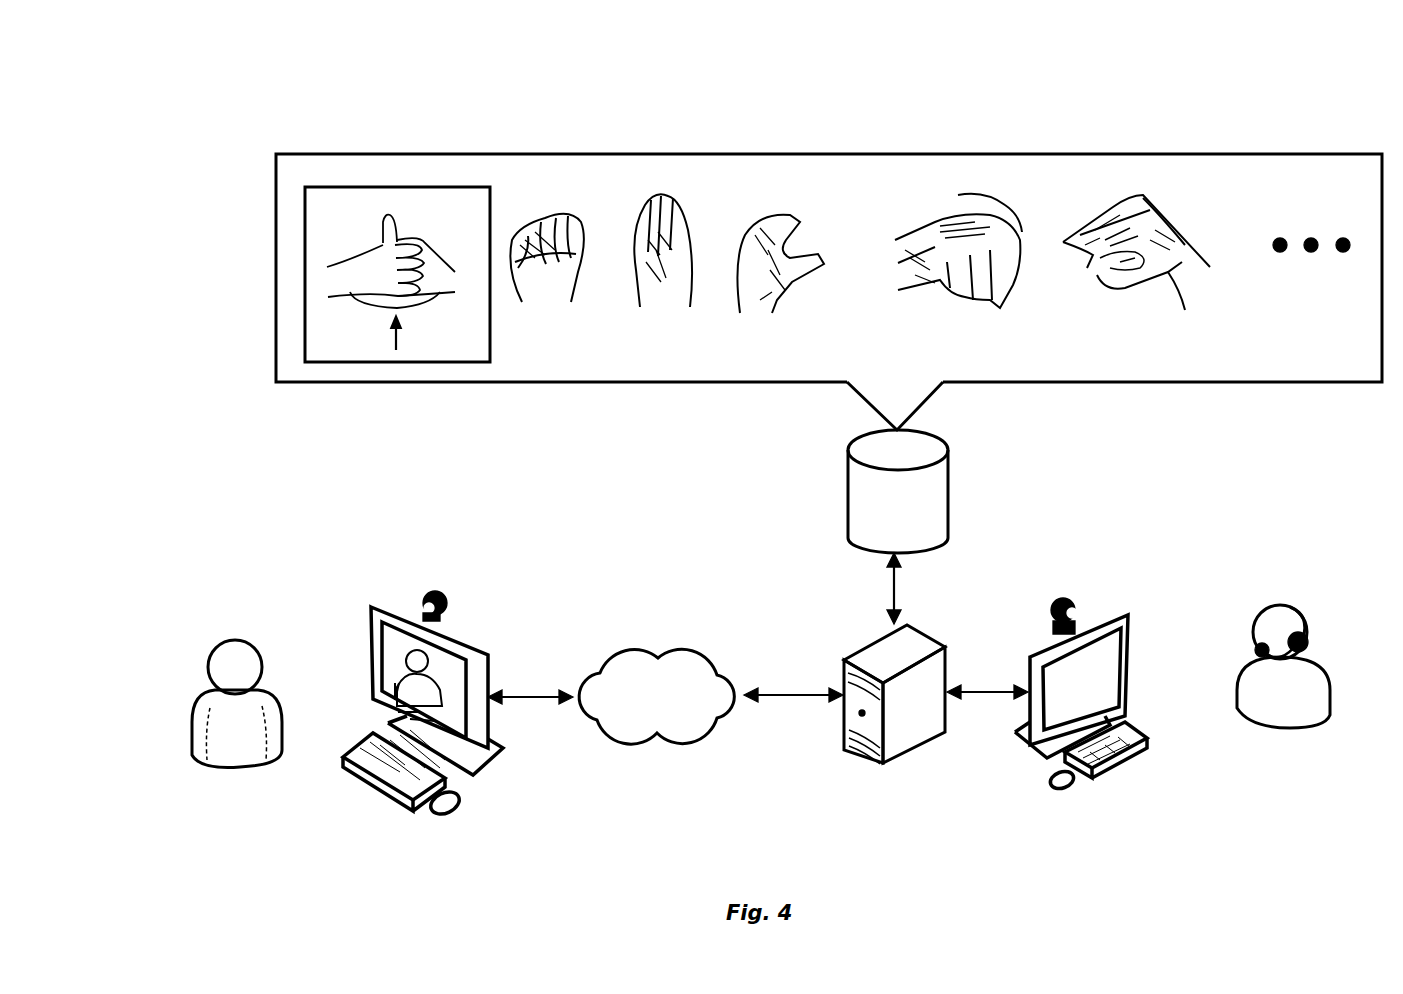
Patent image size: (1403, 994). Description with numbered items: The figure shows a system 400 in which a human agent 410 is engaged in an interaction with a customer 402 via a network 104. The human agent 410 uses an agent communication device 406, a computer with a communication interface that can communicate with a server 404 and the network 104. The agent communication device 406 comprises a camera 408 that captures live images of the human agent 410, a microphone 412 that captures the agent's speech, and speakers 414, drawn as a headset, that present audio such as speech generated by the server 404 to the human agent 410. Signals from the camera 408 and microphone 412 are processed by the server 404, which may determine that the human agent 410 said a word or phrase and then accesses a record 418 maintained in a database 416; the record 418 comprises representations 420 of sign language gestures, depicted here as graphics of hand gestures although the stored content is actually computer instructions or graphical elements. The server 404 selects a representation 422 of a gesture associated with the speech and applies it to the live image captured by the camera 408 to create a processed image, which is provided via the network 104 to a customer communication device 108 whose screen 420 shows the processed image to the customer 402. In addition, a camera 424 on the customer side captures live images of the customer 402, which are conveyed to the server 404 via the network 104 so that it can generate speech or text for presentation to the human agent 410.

The system 400 is at (1085, 58).
The customer 402 is at (215, 765).
The network 104 is at (687, 743).
The customer communication device 108 is at (477, 765).
The camera 424 is at (442, 595).
The representations of sign language gestures / screen 420 is at (533, 154).
The representation 422 is at (367, 187).
The record 418 is at (960, 382).
The database 416 is at (947, 517).
The server 404 is at (895, 753).
The agent communication device 406 is at (1105, 775).
The camera 408 is at (1076, 604).
The human agent 410 is at (1256, 618).
The microphone 412 is at (1258, 646).
The speakers 414 is at (1300, 632).